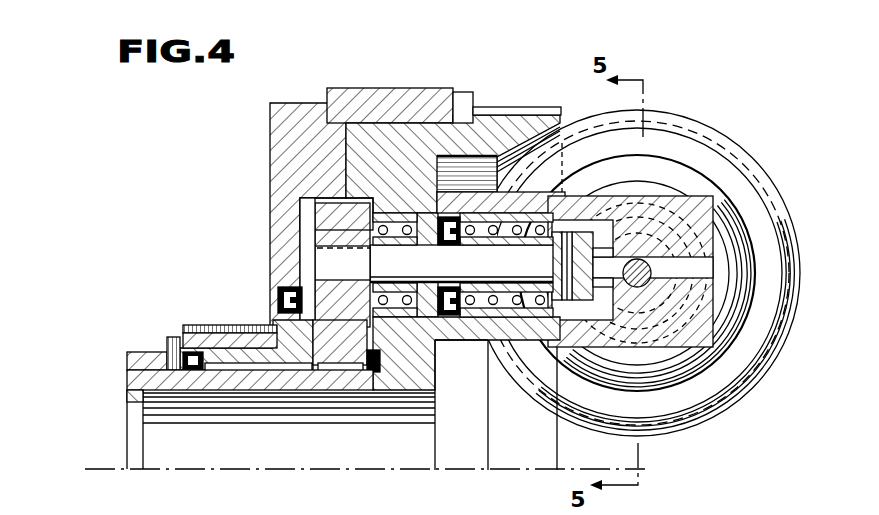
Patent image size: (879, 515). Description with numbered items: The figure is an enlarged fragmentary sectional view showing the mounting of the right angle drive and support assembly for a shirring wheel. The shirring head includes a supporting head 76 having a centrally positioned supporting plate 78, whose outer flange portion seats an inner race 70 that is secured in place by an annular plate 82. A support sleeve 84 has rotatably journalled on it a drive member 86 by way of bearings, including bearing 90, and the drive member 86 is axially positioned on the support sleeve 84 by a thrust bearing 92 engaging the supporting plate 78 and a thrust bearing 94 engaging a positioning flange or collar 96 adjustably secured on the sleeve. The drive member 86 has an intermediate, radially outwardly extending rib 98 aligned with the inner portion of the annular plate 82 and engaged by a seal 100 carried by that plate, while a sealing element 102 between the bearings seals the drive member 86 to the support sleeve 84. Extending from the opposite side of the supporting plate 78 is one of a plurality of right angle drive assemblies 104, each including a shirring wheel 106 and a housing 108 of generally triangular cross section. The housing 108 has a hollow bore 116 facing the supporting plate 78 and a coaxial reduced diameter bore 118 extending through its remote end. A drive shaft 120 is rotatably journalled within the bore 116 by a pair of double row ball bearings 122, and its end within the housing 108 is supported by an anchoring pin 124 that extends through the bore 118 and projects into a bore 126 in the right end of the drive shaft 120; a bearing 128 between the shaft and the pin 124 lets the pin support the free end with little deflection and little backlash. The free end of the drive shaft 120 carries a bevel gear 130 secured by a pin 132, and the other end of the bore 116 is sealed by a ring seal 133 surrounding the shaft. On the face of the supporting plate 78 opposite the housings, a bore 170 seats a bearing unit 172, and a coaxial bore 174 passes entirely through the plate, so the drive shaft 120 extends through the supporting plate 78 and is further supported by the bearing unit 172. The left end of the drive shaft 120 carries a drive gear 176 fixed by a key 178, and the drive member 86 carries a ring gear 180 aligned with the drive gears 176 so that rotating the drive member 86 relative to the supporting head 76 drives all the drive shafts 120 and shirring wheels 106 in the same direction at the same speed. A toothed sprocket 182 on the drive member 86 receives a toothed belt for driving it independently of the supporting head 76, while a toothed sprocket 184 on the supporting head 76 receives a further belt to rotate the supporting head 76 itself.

The inner race 70 is at (410, 90).
The supporting head 76 is at (457, 135).
The supporting plate 78 is at (298, 193).
The annular plate 82 is at (273, 118).
The support sleeve 84 is at (127, 377).
The drive member 86 is at (145, 396).
The bearing 90 is at (245, 372).
The thrust bearing 92 is at (335, 340).
The thrust bearing 94 is at (177, 372).
The positioning flange or collar 96 is at (152, 352).
The rib 98 is at (297, 345).
The seal 100 is at (278, 300).
The sealing element 102 is at (193, 370).
The right angle drive assembly 104 is at (718, 398).
The shirring wheel 106 is at (695, 430).
The housing 108 is at (713, 197).
The bore 116 is at (487, 342).
The reduced diameter bore 118 is at (755, 228).
The drive shaft 120 is at (461, 263).
The double row ball bearings 122 is at (506, 265).
The anchoring pin 124 is at (703, 262).
The bore 126 is at (586, 345).
The bearing 128 is at (633, 227).
The bevel gear 130 is at (598, 226).
The pin 132 is at (557, 352).
The ring seal 133 is at (448, 320).
The bore 170 is at (377, 227).
The bearing unit 172 is at (397, 212).
The bore 174 is at (430, 316).
The drive gear 176 is at (302, 224).
The key 178 is at (325, 246).
The ring gear 180 is at (342, 372).
The toothed sprocket 182 is at (222, 326).
The toothed sprocket 184 is at (503, 110).